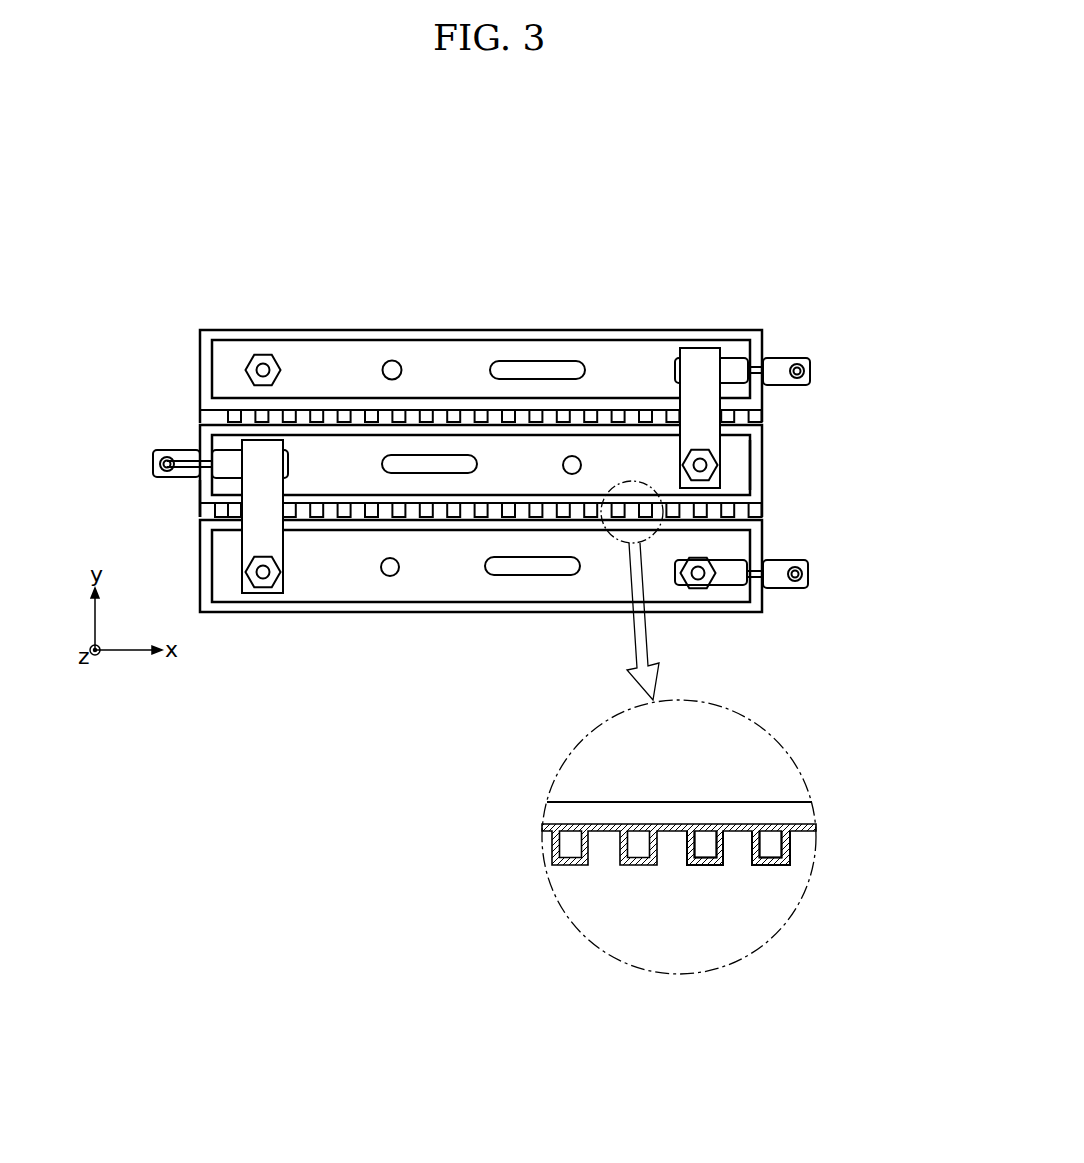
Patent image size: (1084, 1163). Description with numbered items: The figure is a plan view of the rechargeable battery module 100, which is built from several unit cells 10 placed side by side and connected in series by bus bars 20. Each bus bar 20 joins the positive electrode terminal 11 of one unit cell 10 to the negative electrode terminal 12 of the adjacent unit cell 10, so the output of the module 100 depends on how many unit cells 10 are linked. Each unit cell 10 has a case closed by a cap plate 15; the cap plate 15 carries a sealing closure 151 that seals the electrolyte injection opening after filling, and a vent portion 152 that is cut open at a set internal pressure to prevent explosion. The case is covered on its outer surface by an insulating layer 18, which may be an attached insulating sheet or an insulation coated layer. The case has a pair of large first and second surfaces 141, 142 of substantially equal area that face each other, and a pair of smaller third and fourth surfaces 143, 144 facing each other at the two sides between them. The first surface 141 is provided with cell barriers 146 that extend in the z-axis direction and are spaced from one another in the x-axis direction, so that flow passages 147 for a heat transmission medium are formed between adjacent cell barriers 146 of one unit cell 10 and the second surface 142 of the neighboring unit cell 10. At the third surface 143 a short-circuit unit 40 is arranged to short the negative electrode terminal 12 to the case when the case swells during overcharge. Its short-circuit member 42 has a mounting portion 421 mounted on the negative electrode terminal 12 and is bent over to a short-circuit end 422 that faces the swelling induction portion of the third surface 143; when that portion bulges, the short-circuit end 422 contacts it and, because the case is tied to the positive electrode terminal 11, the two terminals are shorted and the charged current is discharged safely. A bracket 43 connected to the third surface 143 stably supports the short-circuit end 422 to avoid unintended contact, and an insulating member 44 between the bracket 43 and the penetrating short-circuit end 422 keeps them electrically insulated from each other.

The rechargeable battery module 100 is at (480, 582).
The unit cell 10 is at (776, 330).
The positive electrode terminal 11 is at (700, 465).
The negative electrode terminal 12 is at (263, 352).
The cap plate 15 is at (522, 465).
The insulating layer 18 is at (533, 647).
The bus bar 20 is at (703, 348).
The short-circuit unit 40 is at (181, 387).
The short-circuit member 42 is at (206, 369).
The mounting portion 421 is at (220, 453).
The short-circuit end 422 is at (157, 450).
The bracket 43 is at (160, 470).
The insulating member 44 is at (157, 463).
The first surface 141 is at (431, 517).
The second surface 142 is at (413, 415).
The third surface 143 is at (202, 492).
The fourth surface 144 is at (755, 442).
The cell barrier 146 is at (468, 517).
The flow passage 147 is at (562, 505).
The sealing closure 151 is at (390, 577).
The vent portion 152 is at (514, 577).